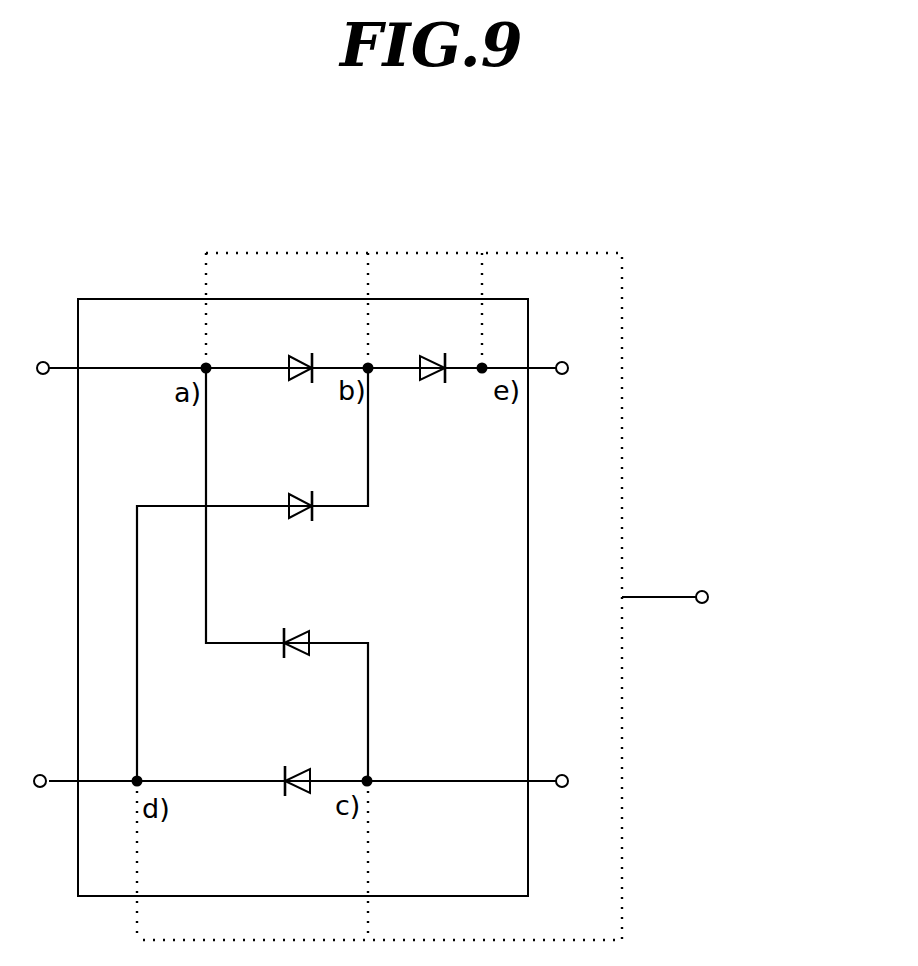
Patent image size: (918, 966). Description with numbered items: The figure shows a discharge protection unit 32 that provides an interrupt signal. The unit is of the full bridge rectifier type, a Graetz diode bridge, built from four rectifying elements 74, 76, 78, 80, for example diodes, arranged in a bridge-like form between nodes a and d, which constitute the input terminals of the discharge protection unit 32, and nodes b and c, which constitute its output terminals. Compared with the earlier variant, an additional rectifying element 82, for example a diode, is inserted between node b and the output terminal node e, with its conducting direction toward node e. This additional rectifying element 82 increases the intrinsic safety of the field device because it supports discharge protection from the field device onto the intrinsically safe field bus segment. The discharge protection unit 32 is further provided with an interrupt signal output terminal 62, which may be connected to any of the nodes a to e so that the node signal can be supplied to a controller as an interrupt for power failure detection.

The discharge protection unit 32 is at (88, 299).
The interrupt signal output terminal 62 is at (716, 597).
The rectifying element 74 is at (302, 379).
The rectifying element 76 is at (302, 517).
The rectifying element 78 is at (297, 656).
The rectifying element 80 is at (294, 792).
The additional rectifying element 82 is at (434, 379).